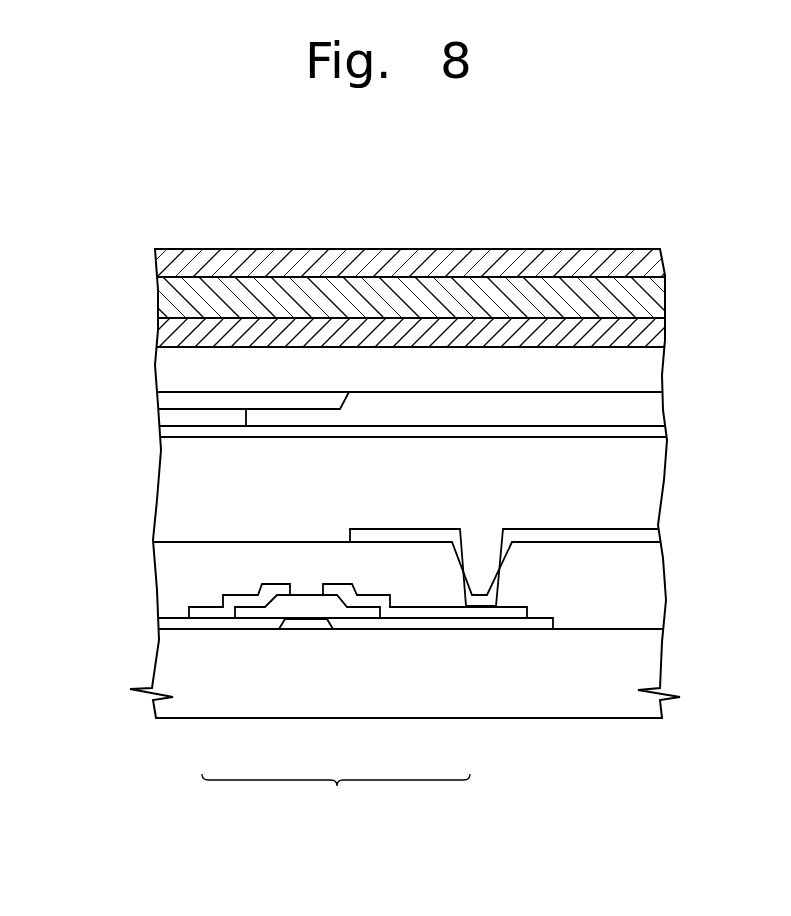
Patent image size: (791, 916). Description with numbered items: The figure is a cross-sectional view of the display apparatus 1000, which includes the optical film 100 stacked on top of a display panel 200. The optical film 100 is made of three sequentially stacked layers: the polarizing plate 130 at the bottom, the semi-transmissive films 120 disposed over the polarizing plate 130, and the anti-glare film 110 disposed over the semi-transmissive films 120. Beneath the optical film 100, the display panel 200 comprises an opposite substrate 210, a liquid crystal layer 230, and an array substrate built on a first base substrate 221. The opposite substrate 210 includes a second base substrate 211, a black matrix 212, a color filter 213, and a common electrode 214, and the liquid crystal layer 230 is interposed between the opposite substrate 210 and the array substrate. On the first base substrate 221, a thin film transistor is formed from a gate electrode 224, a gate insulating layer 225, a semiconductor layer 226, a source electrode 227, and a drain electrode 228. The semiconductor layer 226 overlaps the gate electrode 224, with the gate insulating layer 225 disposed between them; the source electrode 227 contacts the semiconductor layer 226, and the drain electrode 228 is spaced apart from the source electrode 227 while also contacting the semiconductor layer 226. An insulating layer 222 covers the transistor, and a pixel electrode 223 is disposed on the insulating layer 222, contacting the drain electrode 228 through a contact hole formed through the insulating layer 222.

The display apparatus 1000 is at (702, 159).
The optical film 100 is at (87, 252).
The anti-glare film 110 is at (158, 268).
The semi-transmissive films 120 is at (160, 302).
The polarizing plate 130 is at (160, 331).
The opposite substrate 210 is at (87, 355).
The second base substrate 211 is at (172, 367).
The black matrix 212 is at (172, 398).
The color filter 213 is at (172, 420).
The common electrode 214 is at (160, 431).
The liquid crystal layer 230 is at (173, 492).
The display panel 200 is at (313, 814).
The first base substrate 221 is at (635, 705).
The insulating layer 222 is at (597, 613).
The pixel electrode 223 is at (533, 533).
The gate electrode 224 is at (302, 622).
The gate insulating layer 225 is at (454, 623).
The semiconductor layer 226 is at (358, 611).
The source electrode 227 is at (231, 608).
The drain electrode 228 is at (404, 612).